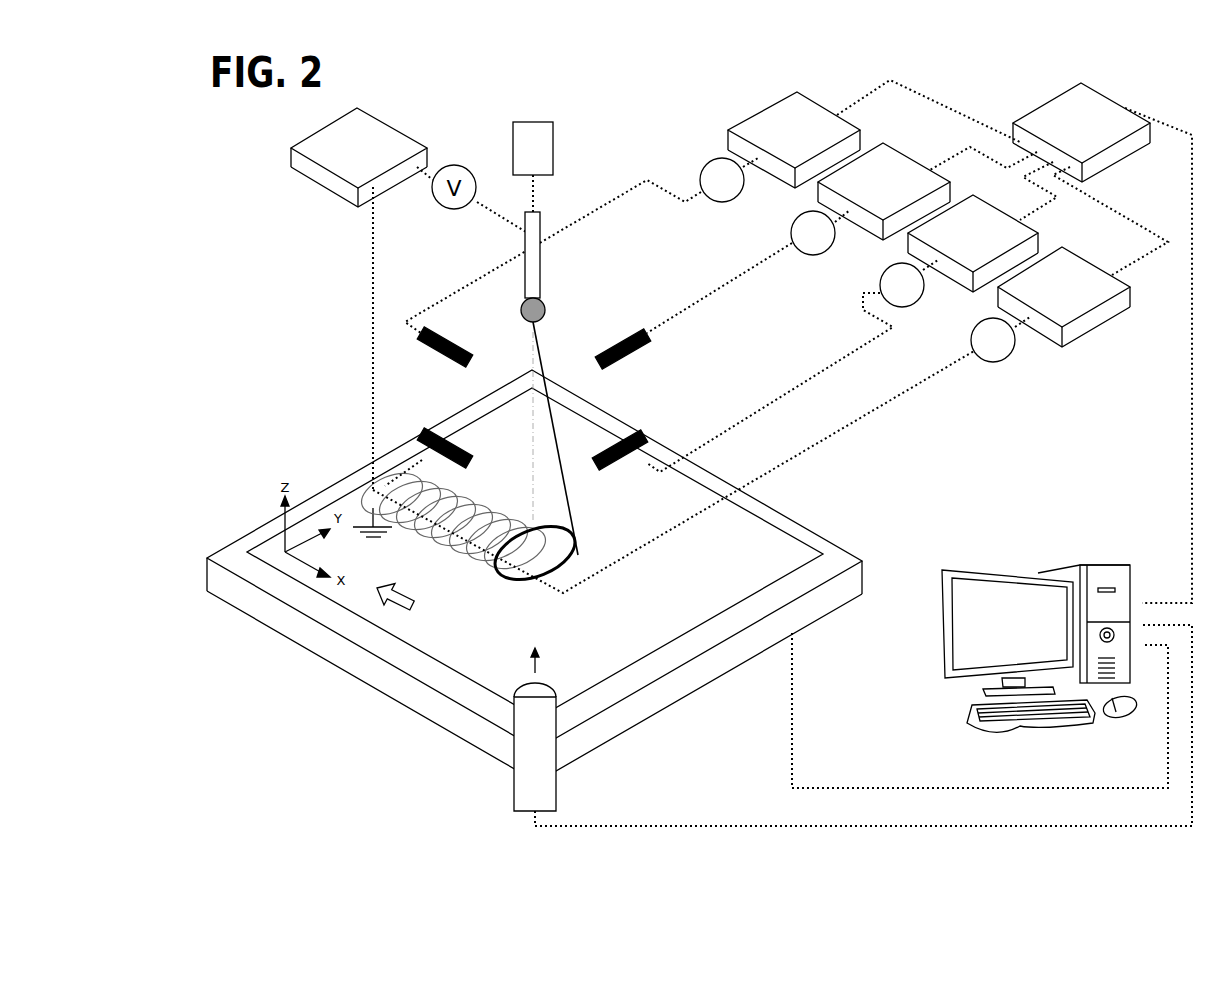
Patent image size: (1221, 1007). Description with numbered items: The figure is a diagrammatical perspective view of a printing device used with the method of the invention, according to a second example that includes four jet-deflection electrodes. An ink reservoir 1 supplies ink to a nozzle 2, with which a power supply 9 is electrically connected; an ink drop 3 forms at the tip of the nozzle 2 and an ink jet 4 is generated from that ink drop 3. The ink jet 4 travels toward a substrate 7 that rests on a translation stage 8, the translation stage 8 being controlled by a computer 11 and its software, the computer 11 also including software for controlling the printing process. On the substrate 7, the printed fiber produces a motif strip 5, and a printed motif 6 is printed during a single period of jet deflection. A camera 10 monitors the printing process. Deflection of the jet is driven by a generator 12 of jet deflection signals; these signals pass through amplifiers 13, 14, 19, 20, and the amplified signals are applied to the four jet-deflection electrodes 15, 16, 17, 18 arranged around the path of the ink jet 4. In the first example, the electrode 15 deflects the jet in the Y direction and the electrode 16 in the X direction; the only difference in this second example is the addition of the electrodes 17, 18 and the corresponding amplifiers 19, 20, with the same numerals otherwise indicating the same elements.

The ink reservoir 1 is at (537, 155).
The nozzle 2 is at (532, 270).
The ink drop 3 is at (530, 307).
The ink jet 4 is at (540, 368).
The motif strip 5 is at (433, 533).
The printed motif 6 is at (563, 580).
The substrate 7 is at (708, 598).
The translation stage 8 is at (356, 669).
The power supply 9 is at (347, 155).
The camera 10 is at (536, 790).
The computer 11 is at (1008, 622).
The generator of jet deflection signals 12 is at (1068, 123).
The amplifier 13 is at (850, 180).
The amplifier 14 is at (952, 225).
The jet-deflection electrode 15 is at (623, 358).
The jet-deflection electrode 16 is at (630, 447).
The jet-deflection electrode 17 is at (440, 352).
The jet-deflection electrode 18 is at (438, 448).
The amplifier 19 is at (792, 127).
The amplifier 20 is at (1062, 293).